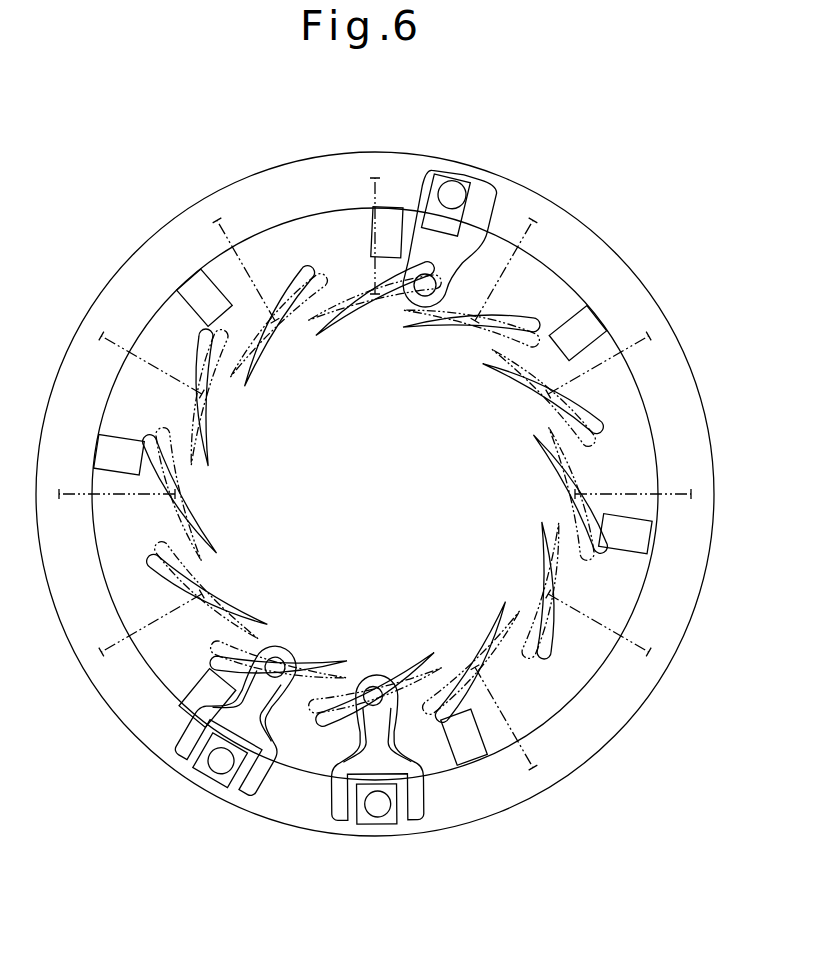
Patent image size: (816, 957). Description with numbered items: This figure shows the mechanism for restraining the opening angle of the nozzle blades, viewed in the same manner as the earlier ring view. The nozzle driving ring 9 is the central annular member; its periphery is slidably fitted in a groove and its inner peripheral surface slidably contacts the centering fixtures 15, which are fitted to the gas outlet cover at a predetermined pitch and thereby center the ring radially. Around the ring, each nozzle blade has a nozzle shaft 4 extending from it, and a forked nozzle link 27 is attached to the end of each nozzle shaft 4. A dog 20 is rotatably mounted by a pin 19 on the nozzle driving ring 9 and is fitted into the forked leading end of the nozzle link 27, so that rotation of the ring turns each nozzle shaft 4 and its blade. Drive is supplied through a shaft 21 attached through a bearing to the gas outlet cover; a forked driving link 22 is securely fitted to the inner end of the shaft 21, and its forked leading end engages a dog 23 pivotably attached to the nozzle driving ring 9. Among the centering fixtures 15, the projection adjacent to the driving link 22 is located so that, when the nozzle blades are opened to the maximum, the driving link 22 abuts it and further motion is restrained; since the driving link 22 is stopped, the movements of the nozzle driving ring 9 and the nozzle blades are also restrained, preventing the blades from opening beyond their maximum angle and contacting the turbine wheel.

The nozzle shaft 4 is at (373, 688).
The nozzle driving ring 9 is at (630, 715).
The centering fixture 15 is at (558, 332).
The pin 19 is at (457, 192).
The dog 20 is at (390, 817).
The shaft 21 is at (425, 297).
The driving link 22 is at (488, 244).
The dog 23 is at (445, 172).
The nozzle link 27 is at (407, 783).